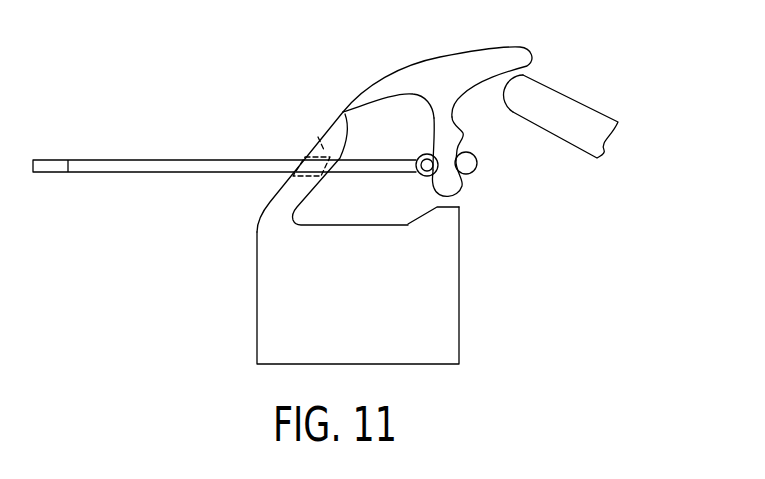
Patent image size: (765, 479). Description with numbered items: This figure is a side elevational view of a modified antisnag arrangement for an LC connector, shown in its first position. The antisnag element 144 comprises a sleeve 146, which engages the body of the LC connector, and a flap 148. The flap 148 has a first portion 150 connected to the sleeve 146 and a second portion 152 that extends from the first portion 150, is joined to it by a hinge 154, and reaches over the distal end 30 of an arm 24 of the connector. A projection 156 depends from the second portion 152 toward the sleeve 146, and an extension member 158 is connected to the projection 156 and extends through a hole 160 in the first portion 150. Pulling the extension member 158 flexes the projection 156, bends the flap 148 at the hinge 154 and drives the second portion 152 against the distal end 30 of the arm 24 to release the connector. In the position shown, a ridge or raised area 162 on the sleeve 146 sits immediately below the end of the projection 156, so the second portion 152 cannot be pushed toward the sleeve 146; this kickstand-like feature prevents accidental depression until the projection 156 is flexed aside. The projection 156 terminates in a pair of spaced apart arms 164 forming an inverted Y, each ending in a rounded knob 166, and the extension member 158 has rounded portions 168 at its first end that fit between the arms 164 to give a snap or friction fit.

The arm 24 is at (585, 121).
The distal end 30 is at (532, 84).
The antisnag element 144 is at (213, 243).
The sleeve 146 is at (450, 297).
The flap 148 is at (277, 71).
The first portion 150 is at (259, 210).
The second portion 152 is at (425, 83).
The hinge 154 is at (343, 110).
The projection 156 is at (463, 133).
The extension member 158 is at (130, 162).
The hole 160 is at (318, 137).
The ridge or raised area 162 is at (450, 216).
The spaced apart arms 164 is at (463, 187).
The rounded knob 166 is at (440, 139).
The rounded portions 168 is at (477, 166).